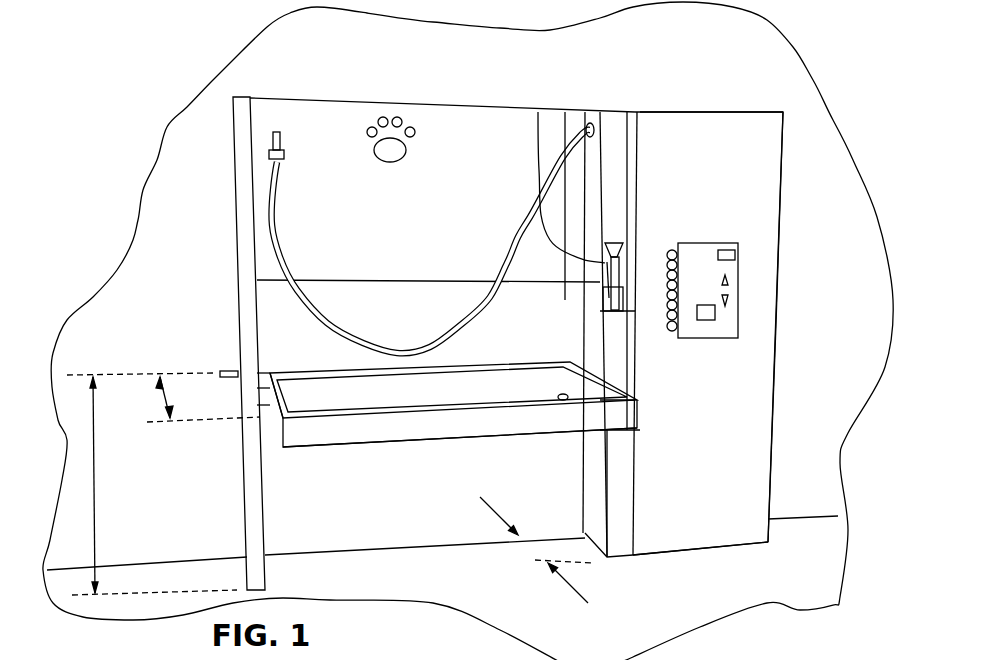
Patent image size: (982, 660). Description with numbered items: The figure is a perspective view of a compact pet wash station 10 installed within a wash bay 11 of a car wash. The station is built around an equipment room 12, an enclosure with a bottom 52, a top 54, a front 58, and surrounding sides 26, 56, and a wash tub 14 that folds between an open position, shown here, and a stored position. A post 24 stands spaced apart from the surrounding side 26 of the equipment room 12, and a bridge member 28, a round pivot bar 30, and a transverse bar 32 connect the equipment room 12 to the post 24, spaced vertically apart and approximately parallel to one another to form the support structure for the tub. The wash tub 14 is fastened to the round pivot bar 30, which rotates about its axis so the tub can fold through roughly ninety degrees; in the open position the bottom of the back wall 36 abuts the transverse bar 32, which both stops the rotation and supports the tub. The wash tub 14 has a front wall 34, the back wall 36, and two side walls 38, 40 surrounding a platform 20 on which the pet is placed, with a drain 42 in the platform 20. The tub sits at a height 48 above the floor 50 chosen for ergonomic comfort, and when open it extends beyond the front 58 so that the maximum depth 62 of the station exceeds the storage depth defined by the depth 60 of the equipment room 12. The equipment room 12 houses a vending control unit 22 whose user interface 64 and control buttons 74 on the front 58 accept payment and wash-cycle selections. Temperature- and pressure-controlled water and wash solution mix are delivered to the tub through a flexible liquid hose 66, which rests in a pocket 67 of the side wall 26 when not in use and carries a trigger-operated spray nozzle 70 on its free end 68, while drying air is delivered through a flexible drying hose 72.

The compact pet wash station 10 is at (168, 40).
The wash bay 11 is at (168, 131).
The equipment room 12 is at (667, 112).
The wash tub 14 is at (397, 430).
The platform 20 is at (333, 403).
The vending control unit 22 is at (727, 277).
The post 24 is at (267, 515).
The surrounding side 26 is at (603, 147).
The bridge member 28 is at (413, 100).
The round pivot bar 30 is at (227, 372).
The transverse bar 32 is at (283, 420).
The front wall 34 is at (577, 430).
The back wall 36 is at (513, 366).
The side wall 38 is at (290, 373).
The side wall 40 is at (628, 345).
The drain 42 is at (565, 393).
The height 48 is at (97, 526).
The floor 50 is at (393, 589).
The bottom 52 is at (688, 553).
The top 54 is at (750, 112).
The surrounding side 56 is at (780, 324).
The front 58 is at (748, 452).
The depth 60 is at (570, 600).
The maximum depth 62 is at (163, 398).
The user interface 64 is at (727, 330).
The flexible liquid hose 66 is at (620, 293).
The pocket 67 is at (632, 365).
The free end 68 is at (538, 112).
The spray head or nozzle 70 is at (567, 112).
The flexible drying hose 72 is at (279, 140).
The control buttons 74 is at (672, 250).